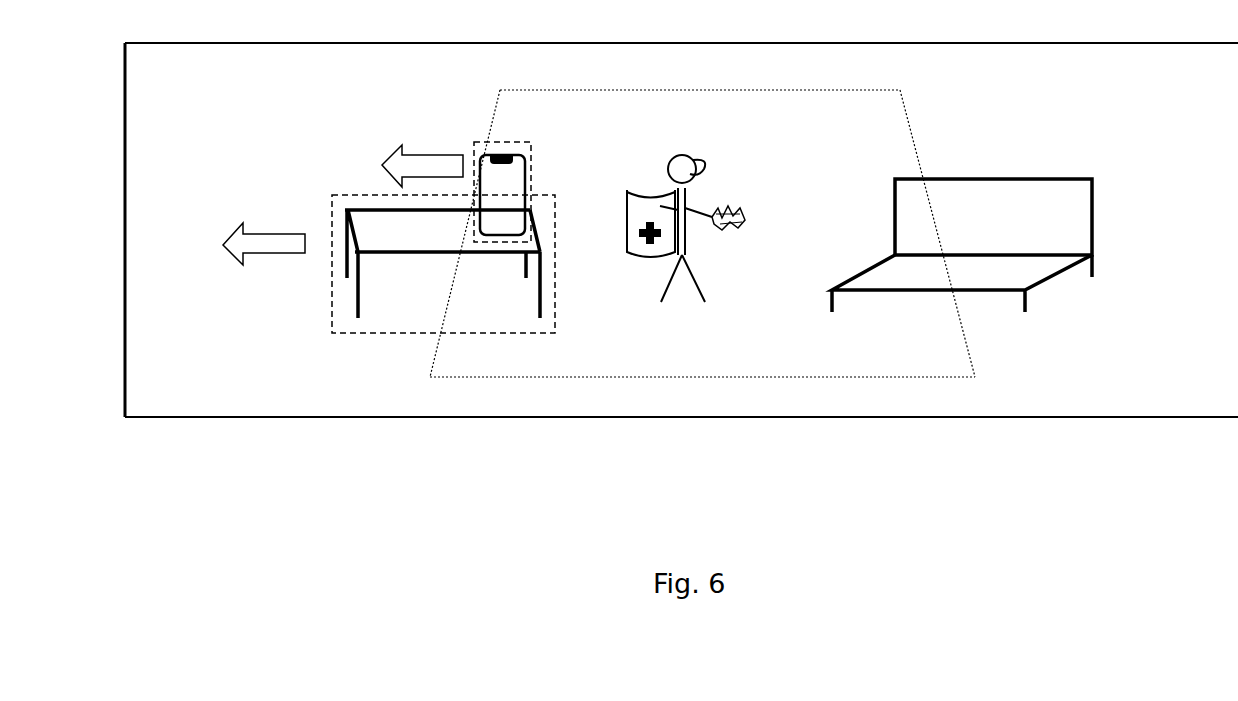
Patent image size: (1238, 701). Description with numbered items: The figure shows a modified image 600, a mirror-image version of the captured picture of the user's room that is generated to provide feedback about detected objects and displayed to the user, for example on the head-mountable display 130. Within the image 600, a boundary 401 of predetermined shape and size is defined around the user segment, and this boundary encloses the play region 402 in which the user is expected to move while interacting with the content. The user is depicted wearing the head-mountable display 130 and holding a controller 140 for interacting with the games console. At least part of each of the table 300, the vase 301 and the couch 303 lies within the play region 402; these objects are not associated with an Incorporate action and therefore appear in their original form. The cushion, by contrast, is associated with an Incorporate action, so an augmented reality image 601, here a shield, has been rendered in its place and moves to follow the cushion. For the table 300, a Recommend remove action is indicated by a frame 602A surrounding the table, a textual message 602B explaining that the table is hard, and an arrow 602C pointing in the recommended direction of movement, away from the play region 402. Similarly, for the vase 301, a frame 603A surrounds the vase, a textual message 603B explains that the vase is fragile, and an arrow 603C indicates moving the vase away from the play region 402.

The modified image 600 is at (122, 91).
The boundary 401 is at (912, 116).
The play region 402 is at (950, 358).
The table 300 is at (361, 284).
The frame 602A is at (330, 322).
The textual message 602B is at (262, 300).
The arrow 602C is at (218, 256).
The frame 603A is at (535, 140).
The textual message 603B is at (370, 121).
The arrow 603C is at (370, 164).
The vase 301 is at (528, 172).
The augmented reality image 601 is at (640, 270).
The head-mountable display 130 is at (708, 163).
The controller 140 is at (732, 229).
The couch 303 is at (1095, 249).